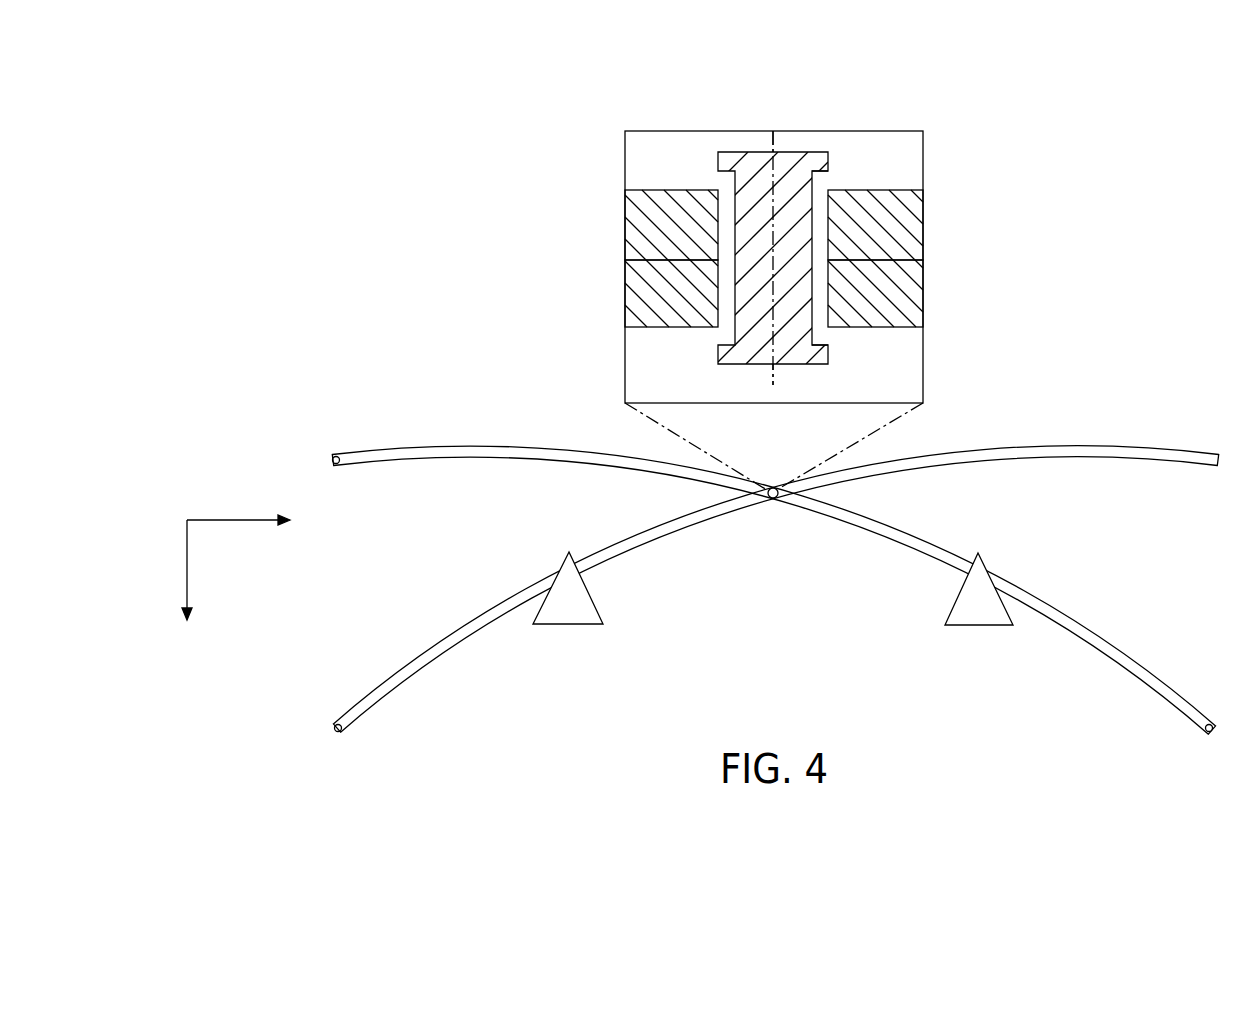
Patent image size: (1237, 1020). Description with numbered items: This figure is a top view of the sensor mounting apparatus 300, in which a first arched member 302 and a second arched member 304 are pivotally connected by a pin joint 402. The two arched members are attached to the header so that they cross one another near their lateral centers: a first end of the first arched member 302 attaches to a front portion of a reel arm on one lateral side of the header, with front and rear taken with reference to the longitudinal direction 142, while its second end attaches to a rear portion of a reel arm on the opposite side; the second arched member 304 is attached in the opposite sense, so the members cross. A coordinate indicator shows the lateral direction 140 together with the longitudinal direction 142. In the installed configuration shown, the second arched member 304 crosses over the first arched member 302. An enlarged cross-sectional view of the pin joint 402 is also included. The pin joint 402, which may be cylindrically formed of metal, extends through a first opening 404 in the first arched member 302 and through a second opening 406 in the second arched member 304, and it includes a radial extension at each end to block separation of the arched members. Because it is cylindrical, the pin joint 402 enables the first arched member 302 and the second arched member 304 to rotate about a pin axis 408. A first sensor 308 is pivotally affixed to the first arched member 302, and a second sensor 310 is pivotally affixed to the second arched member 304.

The sensor mounting apparatus 300 is at (363, 428).
The first arched member 302 is at (640, 303).
The second arched member 304 is at (637, 212).
The first sensor 308 is at (568, 612).
The second sensor 310 is at (977, 615).
The pin joint 402 is at (788, 358).
The first opening 404 is at (820, 318).
The second opening 406 is at (818, 195).
The pin axis 408 is at (776, 142).
The lateral direction 140 is at (233, 518).
The longitudinal direction 142 is at (188, 563).